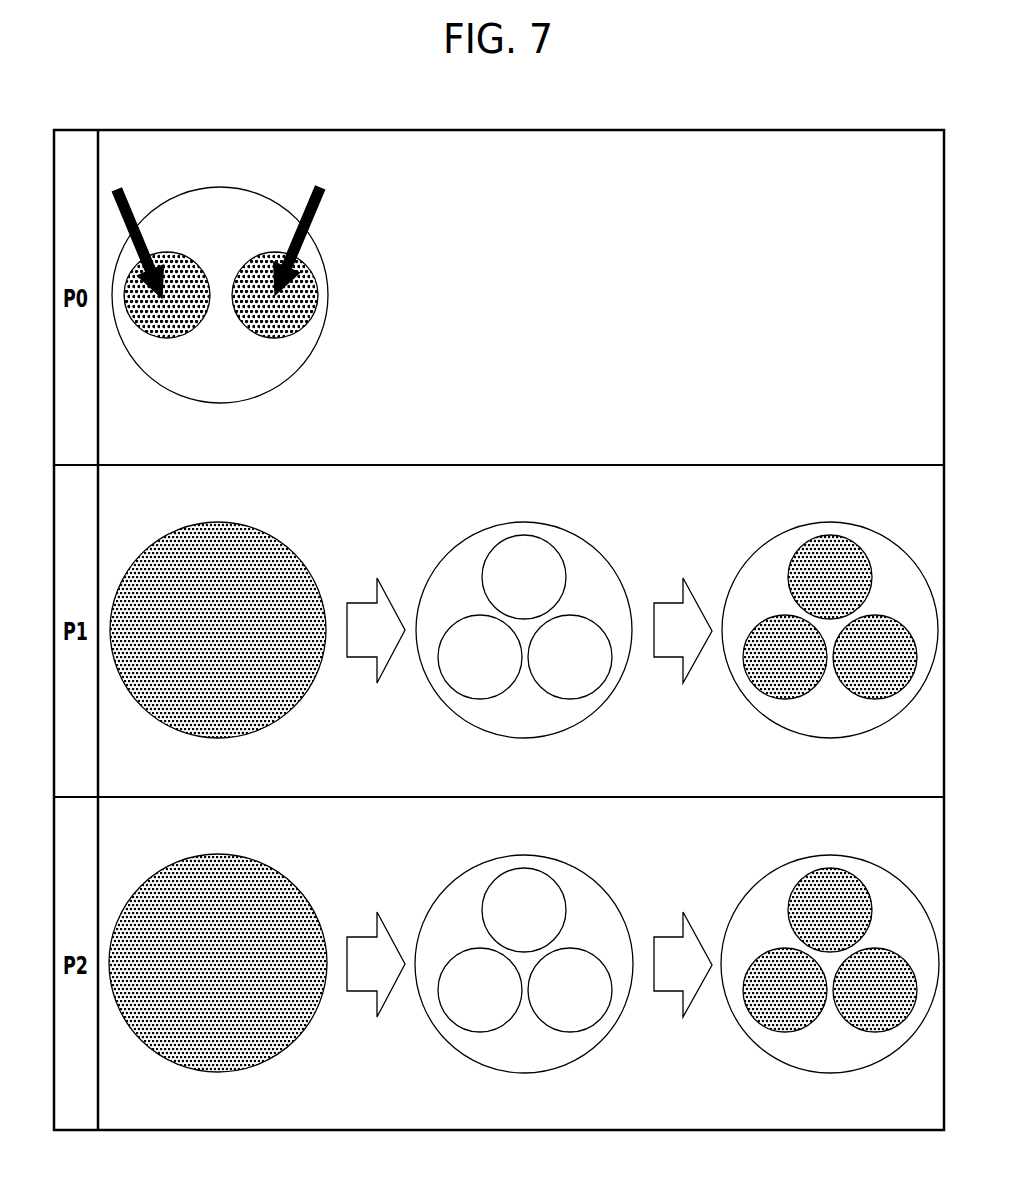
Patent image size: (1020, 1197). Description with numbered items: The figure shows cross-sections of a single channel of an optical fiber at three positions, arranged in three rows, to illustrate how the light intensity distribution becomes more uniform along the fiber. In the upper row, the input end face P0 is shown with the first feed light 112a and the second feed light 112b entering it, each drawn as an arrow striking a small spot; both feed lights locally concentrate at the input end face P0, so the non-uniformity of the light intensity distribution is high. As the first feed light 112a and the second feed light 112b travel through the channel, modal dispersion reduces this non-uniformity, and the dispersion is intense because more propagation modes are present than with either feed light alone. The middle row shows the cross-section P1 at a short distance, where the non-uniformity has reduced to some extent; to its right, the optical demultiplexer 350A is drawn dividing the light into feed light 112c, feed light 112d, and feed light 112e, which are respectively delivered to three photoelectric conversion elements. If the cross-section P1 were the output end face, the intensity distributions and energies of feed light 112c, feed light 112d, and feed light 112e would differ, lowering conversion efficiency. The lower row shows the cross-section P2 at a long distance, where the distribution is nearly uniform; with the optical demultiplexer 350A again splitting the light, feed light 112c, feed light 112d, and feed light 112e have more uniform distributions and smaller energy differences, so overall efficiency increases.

The first feed light 112a is at (125, 196).
The second feed light 112b is at (325, 200).
The feed light 112c is at (822, 565).
The feed light 112d is at (782, 678).
The feed light 112e is at (886, 697).
The optical demultiplexer 350A is at (528, 522).
The input end face P0 is at (225, 184).
The cross-section at a short distance P1 is at (227, 521).
The cross-section at a long distance P2 is at (227, 854).